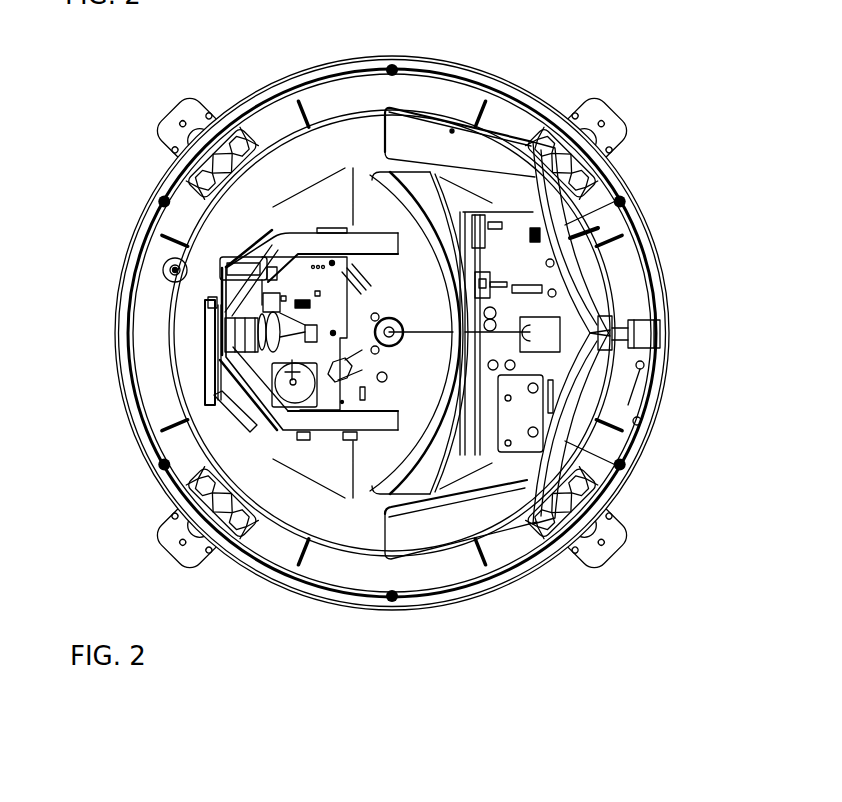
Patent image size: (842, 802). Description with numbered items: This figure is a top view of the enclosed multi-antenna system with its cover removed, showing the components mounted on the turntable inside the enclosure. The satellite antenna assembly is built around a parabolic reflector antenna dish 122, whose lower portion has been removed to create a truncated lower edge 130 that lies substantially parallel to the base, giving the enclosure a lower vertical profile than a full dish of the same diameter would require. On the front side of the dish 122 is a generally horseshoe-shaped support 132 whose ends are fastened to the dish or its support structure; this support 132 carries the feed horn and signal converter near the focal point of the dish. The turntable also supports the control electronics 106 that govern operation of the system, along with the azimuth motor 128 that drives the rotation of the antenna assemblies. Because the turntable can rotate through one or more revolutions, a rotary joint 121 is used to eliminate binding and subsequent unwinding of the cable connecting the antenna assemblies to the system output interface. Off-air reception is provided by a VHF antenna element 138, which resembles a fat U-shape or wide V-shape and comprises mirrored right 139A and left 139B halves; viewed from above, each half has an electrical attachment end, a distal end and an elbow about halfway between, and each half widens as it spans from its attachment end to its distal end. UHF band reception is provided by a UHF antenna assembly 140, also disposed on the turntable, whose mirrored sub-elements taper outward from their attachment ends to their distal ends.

The control electronics 106 is at (232, 253).
The rotary joint 121 is at (385, 318).
The parabolic reflector antenna dish 122 is at (425, 237).
The azimuth motor 128 is at (335, 342).
The truncated lower edge 130 is at (295, 317).
The support 132 is at (272, 235).
The VHF antenna element 138 is at (528, 163).
The right half of VHF antenna element 139A is at (449, 128).
The left half of VHF antenna element 139B is at (402, 542).
The UHF antenna assembly 140 is at (594, 229).